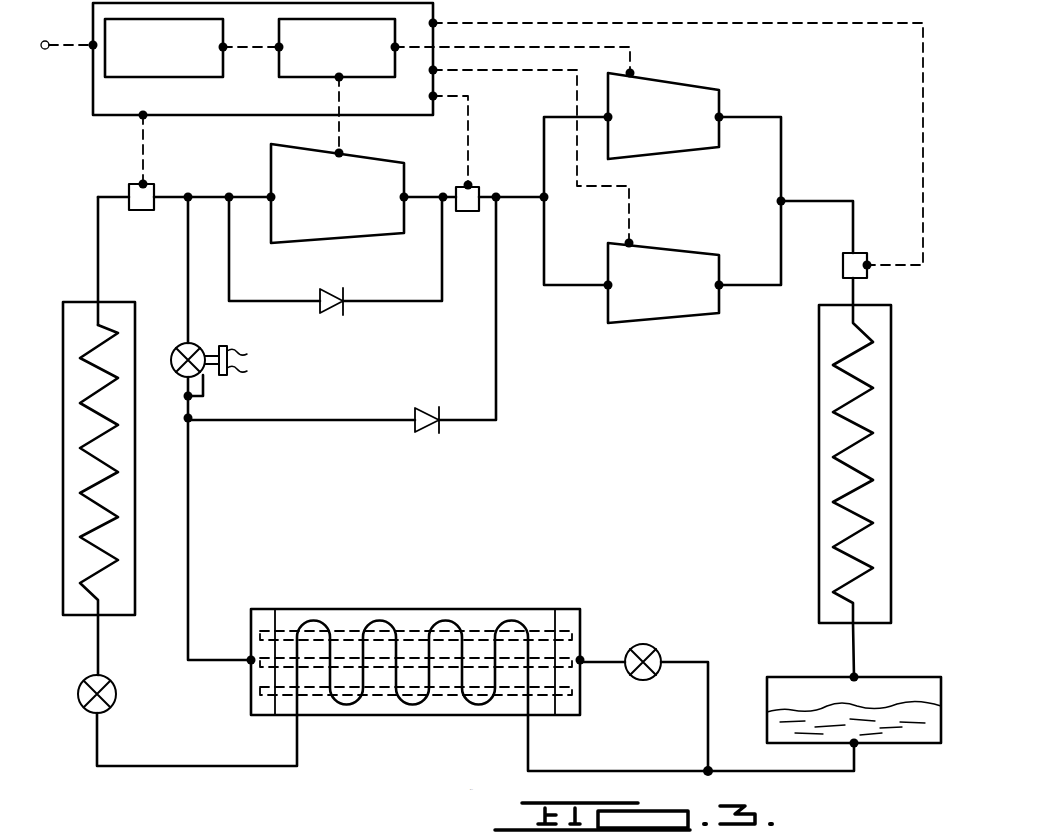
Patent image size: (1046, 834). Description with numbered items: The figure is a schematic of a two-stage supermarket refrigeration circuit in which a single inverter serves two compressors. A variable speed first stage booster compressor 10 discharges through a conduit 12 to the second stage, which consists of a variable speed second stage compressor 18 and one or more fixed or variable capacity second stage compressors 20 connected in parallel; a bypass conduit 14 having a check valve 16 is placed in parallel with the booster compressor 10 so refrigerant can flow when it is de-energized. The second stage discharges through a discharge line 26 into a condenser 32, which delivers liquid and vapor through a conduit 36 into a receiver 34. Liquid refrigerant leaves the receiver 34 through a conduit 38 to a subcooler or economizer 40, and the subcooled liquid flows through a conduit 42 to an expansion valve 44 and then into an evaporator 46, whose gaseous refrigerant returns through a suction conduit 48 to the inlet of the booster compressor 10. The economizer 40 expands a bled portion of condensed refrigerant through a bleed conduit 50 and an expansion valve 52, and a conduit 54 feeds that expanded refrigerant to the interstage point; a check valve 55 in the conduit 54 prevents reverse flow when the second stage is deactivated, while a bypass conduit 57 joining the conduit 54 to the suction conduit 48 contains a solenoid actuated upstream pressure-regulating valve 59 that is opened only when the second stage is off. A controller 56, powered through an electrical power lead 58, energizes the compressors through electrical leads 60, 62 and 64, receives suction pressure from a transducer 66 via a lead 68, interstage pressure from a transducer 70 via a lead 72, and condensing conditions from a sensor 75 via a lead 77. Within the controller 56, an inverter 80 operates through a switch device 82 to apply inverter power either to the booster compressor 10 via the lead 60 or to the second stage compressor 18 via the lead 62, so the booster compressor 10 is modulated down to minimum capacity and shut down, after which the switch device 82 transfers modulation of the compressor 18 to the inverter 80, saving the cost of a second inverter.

The first stage booster compressor 10 is at (385, 163).
The conduit 12 is at (512, 203).
The bypass line 14 is at (257, 300).
The check valve 16 is at (330, 313).
The second stage compressor 18 is at (688, 92).
The second stage compressor 20 is at (663, 323).
The discharge line 26 is at (853, 228).
The condenser 32 is at (883, 397).
The receiver 34 is at (800, 682).
The conduit 36 is at (855, 651).
The conduit 38 is at (612, 770).
The economizer 40 is at (467, 612).
The conduit 42 is at (173, 768).
The expansion valve 44 is at (116, 694).
The evaporator 46 is at (135, 497).
The conduit 48 is at (98, 235).
The bleed conduit 50 is at (708, 708).
The expansion valve 52 is at (645, 645).
The conduit 54 is at (496, 340).
The check valve 55 is at (425, 408).
The controller 56 is at (256, 86).
The bypass conduit 57 is at (188, 263).
The electrical power lead 58 is at (59, 42).
The solenoid actuated upstream pressure-regulating valve 59 is at (178, 347).
The electrical lead 60 is at (339, 124).
The electrical lead 62 is at (562, 47).
The electrical lead 64 is at (629, 186).
The transducer 66 is at (131, 192).
The lead 68 is at (143, 150).
The transducer 70 is at (472, 190).
The lead 72 is at (470, 112).
The sensor 75 is at (843, 258).
The lead 77 is at (795, 24).
The inverter 80 is at (166, 86).
The switch device 82 is at (315, 80).